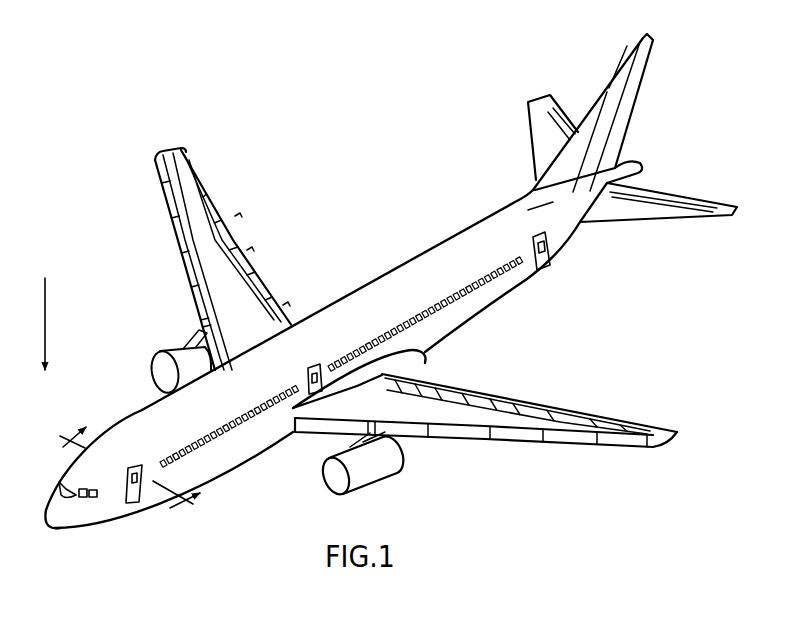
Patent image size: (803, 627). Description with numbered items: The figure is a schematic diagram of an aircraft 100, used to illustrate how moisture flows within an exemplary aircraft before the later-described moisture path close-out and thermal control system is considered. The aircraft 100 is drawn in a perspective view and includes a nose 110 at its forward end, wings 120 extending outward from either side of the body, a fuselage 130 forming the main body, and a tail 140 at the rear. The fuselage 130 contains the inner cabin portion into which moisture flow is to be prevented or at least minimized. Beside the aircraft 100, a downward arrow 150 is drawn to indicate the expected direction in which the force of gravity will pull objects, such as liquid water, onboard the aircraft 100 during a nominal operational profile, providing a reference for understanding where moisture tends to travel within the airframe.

The aircraft 100 is at (340, 226).
The nose 110 is at (57, 538).
The wings 120 is at (184, 141).
The fuselage 130 is at (460, 322).
The tail 140 is at (653, 41).
The downward arrow 150 is at (46, 318).